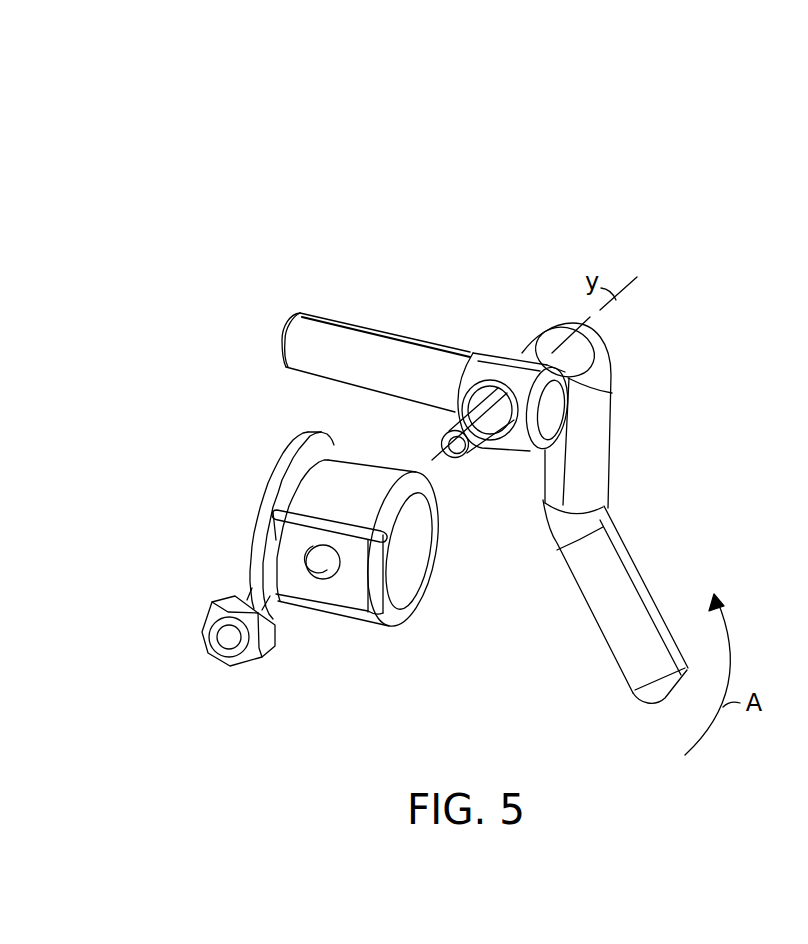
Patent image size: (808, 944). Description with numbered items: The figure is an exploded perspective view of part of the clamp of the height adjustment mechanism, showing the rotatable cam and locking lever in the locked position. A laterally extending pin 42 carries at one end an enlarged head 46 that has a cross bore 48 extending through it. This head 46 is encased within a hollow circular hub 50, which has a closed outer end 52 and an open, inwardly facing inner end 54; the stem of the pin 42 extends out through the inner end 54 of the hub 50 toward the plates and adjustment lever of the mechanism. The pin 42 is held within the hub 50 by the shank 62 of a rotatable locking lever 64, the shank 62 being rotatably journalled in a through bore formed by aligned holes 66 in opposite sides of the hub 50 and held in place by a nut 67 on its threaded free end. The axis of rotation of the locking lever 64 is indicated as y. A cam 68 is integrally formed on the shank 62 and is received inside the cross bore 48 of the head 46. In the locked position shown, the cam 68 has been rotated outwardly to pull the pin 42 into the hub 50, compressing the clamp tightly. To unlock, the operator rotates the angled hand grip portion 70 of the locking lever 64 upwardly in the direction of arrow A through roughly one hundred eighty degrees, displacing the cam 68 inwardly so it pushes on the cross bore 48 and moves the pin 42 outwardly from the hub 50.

The pin 42 is at (366, 345).
The enlarged head 46 is at (497, 352).
The cross bore 48 is at (473, 393).
The hollow circular hub 50 is at (335, 610).
The closed outer end 52 is at (415, 567).
The open inner end 54 is at (257, 518).
The shank 62 is at (452, 457).
The rotatable locking lever 64 is at (614, 455).
The aligned holes 66 is at (323, 548).
The nut 67 is at (255, 650).
The cam 68 is at (508, 430).
The angled hand grip portion 70 is at (620, 580).